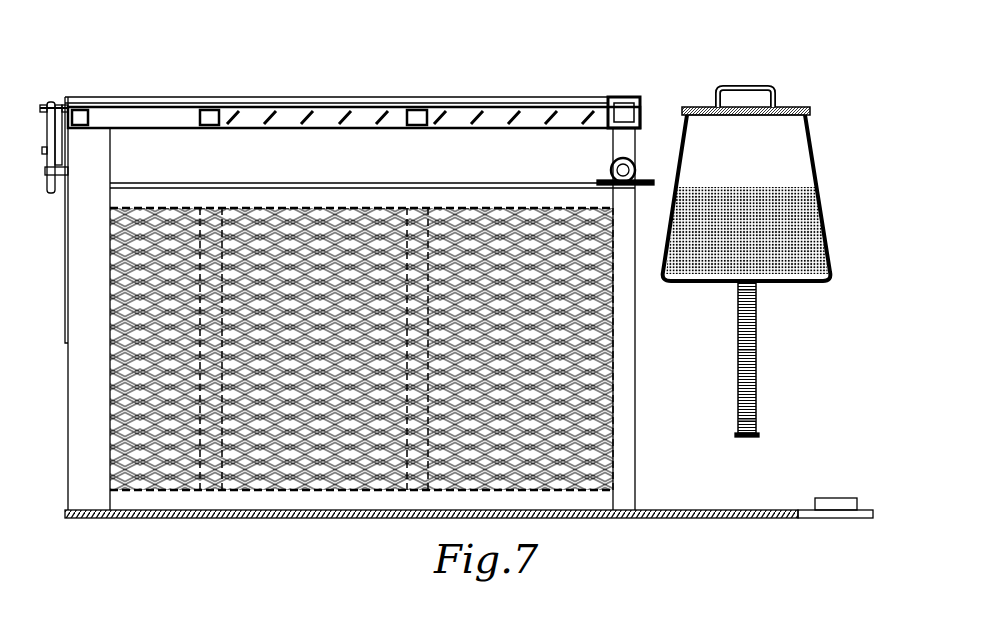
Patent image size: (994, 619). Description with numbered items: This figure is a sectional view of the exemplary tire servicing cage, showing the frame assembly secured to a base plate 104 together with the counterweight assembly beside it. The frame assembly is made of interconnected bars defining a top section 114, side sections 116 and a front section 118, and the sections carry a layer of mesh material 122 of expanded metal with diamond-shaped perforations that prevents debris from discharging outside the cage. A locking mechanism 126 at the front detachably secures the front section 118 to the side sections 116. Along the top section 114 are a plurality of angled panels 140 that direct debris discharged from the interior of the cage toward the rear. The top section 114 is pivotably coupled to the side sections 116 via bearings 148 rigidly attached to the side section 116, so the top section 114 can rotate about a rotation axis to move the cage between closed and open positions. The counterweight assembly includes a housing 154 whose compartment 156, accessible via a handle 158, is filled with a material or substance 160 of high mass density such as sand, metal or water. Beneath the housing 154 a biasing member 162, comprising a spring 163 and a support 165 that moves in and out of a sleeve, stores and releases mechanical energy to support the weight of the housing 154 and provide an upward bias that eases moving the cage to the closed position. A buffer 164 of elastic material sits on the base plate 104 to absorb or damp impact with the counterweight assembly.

The base plate 104 is at (205, 520).
The top section 114 is at (369, 104).
The side sections 116 is at (88, 409).
The front section 118 is at (66, 283).
The mesh material 122 is at (275, 225).
The locking mechanism 126 is at (42, 90).
The panels 140 is at (516, 118).
The bearings 148 is at (612, 168).
The housing 154 is at (812, 137).
The compartment 156 is at (796, 163).
The handles 158 is at (743, 88).
The material or substance 160 is at (790, 233).
The biasing members 162 is at (768, 399).
The spring 163 is at (756, 365).
The buffers 164 is at (835, 500).
The supports 165 is at (748, 438).